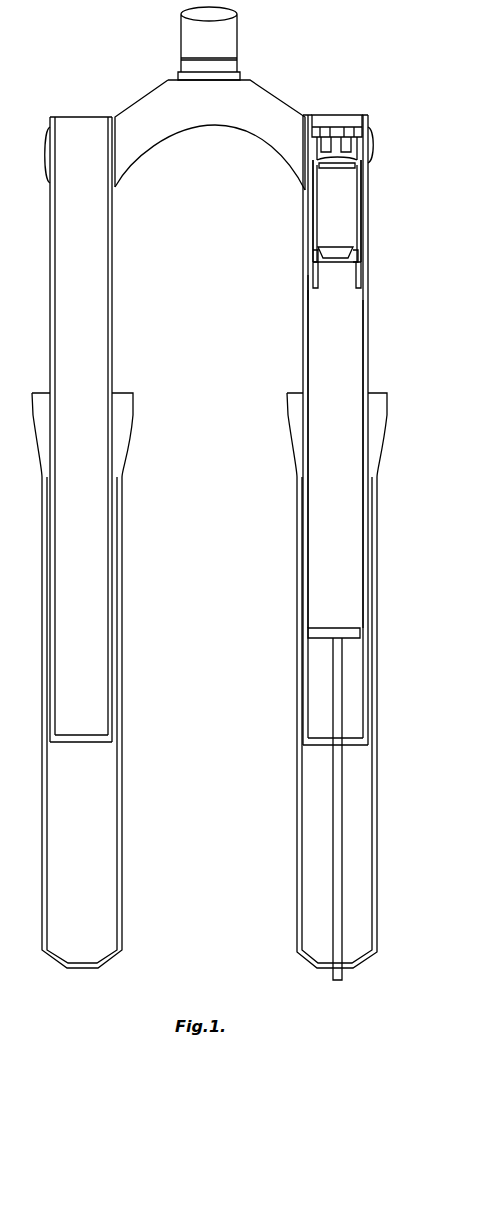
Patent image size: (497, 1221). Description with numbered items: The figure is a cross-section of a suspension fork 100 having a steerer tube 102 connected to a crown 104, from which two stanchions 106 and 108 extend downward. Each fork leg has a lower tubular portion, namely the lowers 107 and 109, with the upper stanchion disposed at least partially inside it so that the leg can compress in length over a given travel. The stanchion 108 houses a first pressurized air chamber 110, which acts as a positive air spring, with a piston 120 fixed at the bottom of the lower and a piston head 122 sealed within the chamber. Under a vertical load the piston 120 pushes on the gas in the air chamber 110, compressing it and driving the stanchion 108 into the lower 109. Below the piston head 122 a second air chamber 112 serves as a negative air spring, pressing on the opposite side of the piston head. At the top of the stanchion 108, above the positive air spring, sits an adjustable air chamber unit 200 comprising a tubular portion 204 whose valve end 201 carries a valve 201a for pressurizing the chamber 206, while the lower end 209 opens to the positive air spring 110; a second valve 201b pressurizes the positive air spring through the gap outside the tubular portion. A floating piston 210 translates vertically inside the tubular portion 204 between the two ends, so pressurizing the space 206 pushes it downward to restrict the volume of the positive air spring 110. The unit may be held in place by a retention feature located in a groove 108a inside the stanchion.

The suspension fork 100 is at (256, 502).
The steerer tube 102 is at (180, 50).
The crown 104 is at (145, 155).
The stanchion 106 is at (115, 280).
The lower 107 is at (120, 882).
The stanchion 108 is at (370, 350).
The groove 108a is at (357, 292).
The lower 109 is at (378, 848).
The first pressurized air chamber 110 is at (342, 535).
The second air chamber 112 is at (352, 720).
The piston 120 is at (342, 920).
The piston head 122 is at (352, 640).
The adjustable air chamber unit 200 is at (362, 265).
The valve end 201 is at (352, 168).
The valve 201a is at (320, 113).
The valve 201b is at (354, 113).
The tubular portion 204 is at (363, 215).
The chamber 206 is at (333, 212).
The lower end 209 is at (330, 278).
The floating piston 210 is at (345, 247).